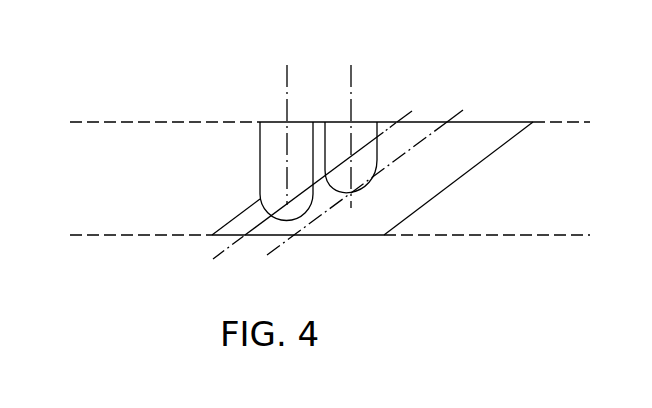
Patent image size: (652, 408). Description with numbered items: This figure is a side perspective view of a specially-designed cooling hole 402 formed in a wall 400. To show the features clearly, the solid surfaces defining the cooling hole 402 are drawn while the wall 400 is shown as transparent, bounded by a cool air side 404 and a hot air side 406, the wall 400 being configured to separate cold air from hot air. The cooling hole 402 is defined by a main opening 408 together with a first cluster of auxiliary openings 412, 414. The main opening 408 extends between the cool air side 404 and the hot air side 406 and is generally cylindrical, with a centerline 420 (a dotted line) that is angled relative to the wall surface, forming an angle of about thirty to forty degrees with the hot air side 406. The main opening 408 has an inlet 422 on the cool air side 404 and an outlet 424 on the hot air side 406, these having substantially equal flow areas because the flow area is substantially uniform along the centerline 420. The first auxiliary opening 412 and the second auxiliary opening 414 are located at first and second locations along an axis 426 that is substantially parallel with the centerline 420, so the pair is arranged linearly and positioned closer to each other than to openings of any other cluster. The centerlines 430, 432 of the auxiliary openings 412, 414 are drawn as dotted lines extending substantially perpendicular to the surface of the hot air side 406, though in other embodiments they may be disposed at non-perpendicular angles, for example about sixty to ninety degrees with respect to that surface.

The wall 400 is at (326, 180).
The cooling hole 402 is at (381, 182).
The cool air side 404 is at (150, 237).
The hot air side 406 is at (190, 122).
The main opening 408 is at (383, 182).
The first auxiliary opening 412 is at (268, 157).
The second auxiliary opening 414 is at (337, 127).
The centerline 420 is at (283, 249).
The inlet 422 is at (357, 237).
The outlet 424 is at (484, 122).
The axis 426 is at (228, 249).
The centerline of first auxiliary opening 430 is at (287, 111).
The centerline of second auxiliary opening 432 is at (352, 104).